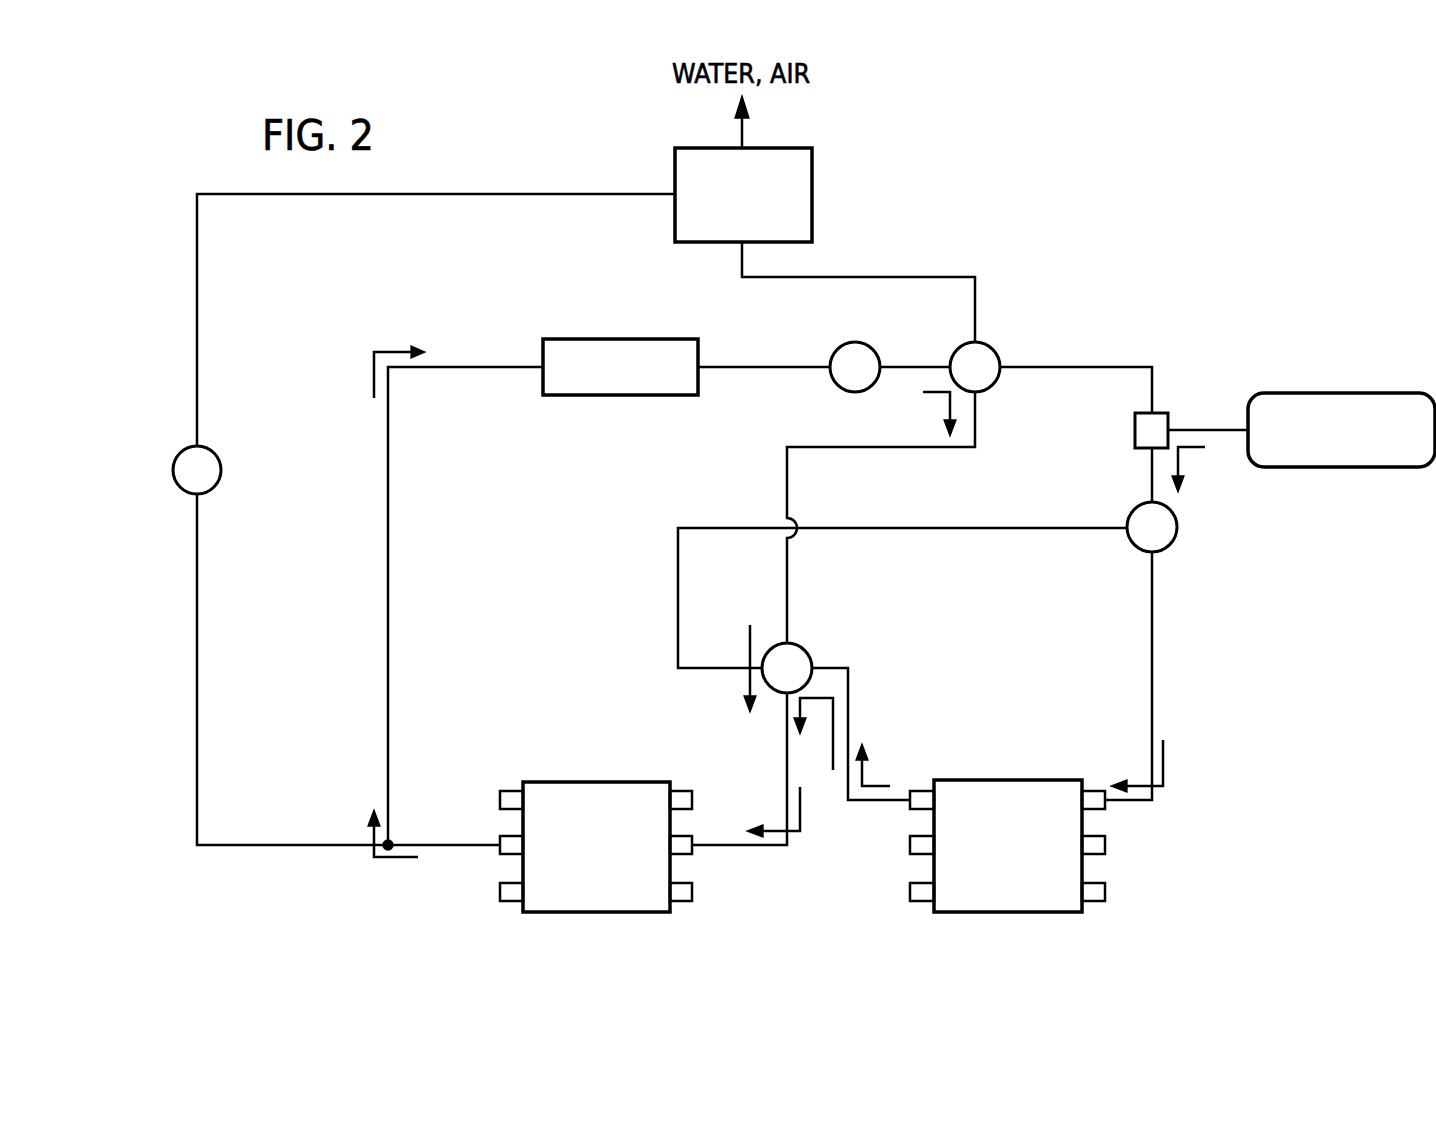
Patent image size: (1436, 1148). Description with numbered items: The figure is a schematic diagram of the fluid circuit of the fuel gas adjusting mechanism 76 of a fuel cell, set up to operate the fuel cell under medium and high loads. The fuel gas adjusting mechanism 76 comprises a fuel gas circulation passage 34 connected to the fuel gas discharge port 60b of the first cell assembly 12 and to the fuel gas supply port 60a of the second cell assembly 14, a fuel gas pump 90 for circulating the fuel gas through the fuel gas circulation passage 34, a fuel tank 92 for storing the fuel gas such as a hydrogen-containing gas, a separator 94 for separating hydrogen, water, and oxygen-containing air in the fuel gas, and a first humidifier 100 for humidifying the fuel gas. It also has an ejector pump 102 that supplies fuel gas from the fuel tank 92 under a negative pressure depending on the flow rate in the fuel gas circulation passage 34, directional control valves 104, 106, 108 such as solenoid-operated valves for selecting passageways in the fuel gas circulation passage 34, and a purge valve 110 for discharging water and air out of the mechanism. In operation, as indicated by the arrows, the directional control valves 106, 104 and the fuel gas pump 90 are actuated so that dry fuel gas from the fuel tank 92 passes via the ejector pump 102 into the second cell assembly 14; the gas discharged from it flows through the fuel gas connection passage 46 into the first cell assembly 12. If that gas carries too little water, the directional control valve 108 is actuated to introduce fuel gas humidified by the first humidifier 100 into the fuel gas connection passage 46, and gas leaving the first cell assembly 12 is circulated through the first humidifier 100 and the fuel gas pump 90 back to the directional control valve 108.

The first cell assembly 12 is at (598, 776).
The second cell assembly 14 is at (1012, 776).
The fuel gas circulation passage 34 is at (432, 840).
The fuel gas connection passage 46 is at (766, 848).
The fuel gas supply port 60a is at (692, 838).
The fuel gas discharge port 60b is at (504, 836).
The fuel gas adjusting mechanism 76 is at (1008, 198).
The fuel gas pump 90 is at (854, 342).
The fuel tank 92 is at (1390, 393).
The separator 94 is at (812, 199).
The first humidifier 100 is at (682, 340).
The ejector pump 102 is at (1134, 432).
The directional control valve 104 is at (1176, 519).
The directional control valve 106 is at (998, 360).
The directional control valve 108 is at (809, 660).
The purge valve 110 is at (175, 472).